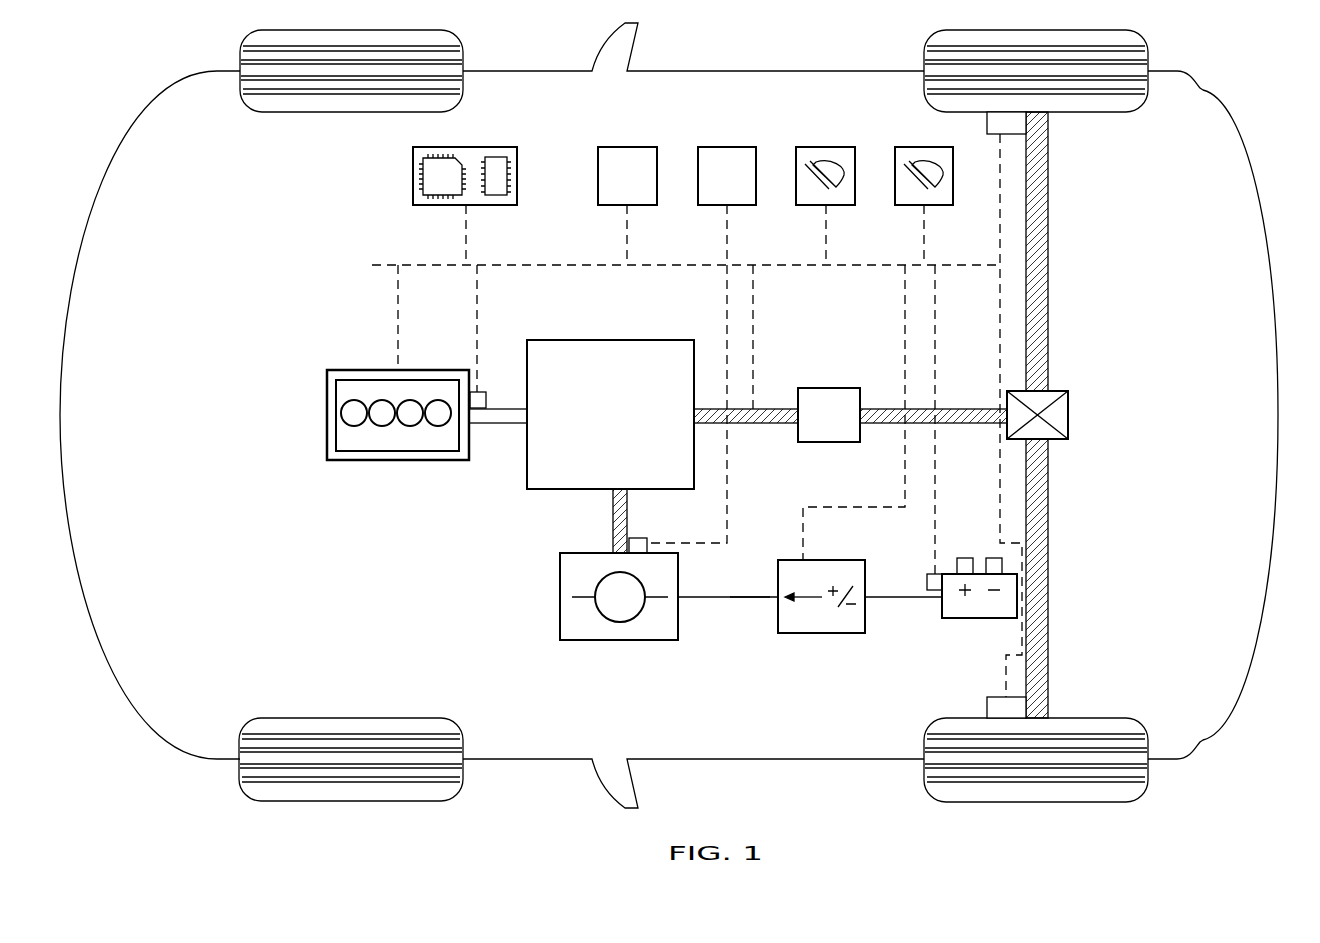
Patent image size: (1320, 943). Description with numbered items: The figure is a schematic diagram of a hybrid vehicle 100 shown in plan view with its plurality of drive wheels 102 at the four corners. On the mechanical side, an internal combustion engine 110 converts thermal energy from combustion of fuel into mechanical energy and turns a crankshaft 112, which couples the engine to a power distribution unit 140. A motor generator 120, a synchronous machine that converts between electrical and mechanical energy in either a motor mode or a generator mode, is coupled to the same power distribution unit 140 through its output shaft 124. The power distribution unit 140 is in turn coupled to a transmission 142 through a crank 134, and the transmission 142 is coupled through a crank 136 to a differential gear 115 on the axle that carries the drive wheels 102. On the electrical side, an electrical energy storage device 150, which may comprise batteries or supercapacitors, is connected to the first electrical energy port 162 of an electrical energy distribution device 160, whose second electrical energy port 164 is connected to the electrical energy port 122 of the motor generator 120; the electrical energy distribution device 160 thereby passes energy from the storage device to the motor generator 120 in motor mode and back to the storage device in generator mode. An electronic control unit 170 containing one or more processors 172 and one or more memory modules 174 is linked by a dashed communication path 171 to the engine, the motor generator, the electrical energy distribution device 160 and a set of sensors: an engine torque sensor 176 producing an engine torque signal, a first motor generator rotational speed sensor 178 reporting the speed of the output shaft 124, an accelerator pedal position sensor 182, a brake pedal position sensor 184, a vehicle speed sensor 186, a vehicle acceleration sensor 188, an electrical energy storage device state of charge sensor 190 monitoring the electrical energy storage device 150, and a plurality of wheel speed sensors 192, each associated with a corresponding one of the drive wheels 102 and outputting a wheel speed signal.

The hybrid vehicle 100 is at (1240, 36).
The drive wheels 102 is at (1148, 52).
The internal combustion engine 110 is at (398, 461).
The crankshaft 112 is at (507, 425).
The differential gear 115 is at (1068, 416).
The motor generator 120 is at (617, 641).
The electrical energy port 122 is at (728, 598).
The output shaft 124 is at (613, 520).
The crank 134 is at (716, 424).
The crank 136 is at (880, 424).
The power distribution unit 140 is at (630, 340).
The transmission 142 is at (835, 388).
The electrical energy storage device 150 is at (976, 619).
The electrical energy distribution device 160 is at (820, 634).
The first electrical energy port 162 is at (910, 598).
The second electrical energy port 164 is at (745, 596).
The electronic control unit 170 is at (436, 188).
The communication path 171 is at (376, 268).
The processors 172 is at (432, 180).
The memory modules 174 is at (496, 196).
The engine torque sensor 176 is at (490, 396).
The first motor generator rotational speed sensor 178 is at (640, 538).
The accelerator pedal position sensor 182 is at (826, 147).
The brake pedal position sensor 184 is at (924, 147).
The vehicle speed sensor 186 is at (627, 147).
The vehicle acceleration sensor 188 is at (727, 147).
The electrical energy storage device state of charge sensor 190 is at (927, 582).
The wheel speed sensors 192 is at (987, 121).